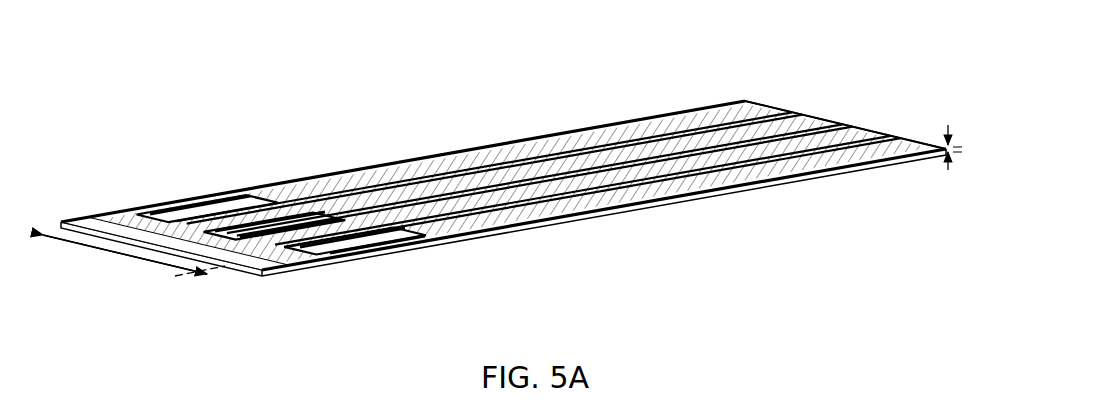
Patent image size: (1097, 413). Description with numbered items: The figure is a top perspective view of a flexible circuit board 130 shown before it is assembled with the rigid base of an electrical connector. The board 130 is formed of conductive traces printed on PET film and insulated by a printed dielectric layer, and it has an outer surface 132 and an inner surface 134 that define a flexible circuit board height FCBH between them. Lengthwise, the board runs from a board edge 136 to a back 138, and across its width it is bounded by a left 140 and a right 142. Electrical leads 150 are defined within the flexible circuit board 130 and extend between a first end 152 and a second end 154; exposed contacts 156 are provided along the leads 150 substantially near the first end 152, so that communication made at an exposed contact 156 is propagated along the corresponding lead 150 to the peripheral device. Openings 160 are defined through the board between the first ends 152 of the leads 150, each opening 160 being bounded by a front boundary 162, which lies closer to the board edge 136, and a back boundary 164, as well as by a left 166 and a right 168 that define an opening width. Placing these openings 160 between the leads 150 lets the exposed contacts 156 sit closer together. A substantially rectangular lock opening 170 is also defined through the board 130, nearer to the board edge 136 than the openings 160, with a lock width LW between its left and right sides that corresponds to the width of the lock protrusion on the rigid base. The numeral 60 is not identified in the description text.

The flexible circuit board 130 is at (362, 62).
The outer surface 132 is at (590, 122).
The inner surface 134 is at (726, 207).
The board edge 136 is at (132, 293).
The back 138 is at (840, 95).
The left 140 is at (584, 224).
The right 142 is at (684, 98).
The electrical leads 150 is at (536, 136).
The first end 152 is at (170, 196).
The second end 154 is at (744, 96).
The exposed contacts 156 is at (265, 212).
The openings 160 is at (420, 230).
The front boundary 162 is at (128, 217).
The back boundary 164 is at (305, 196).
The left 166 is at (366, 218).
The right 168 is at (325, 258).
The lock opening 170 is at (268, 276).
The solder connection 60 is at (238, 200).
The lock width LW is at (125, 258).
The flexible circuit board height FCBH is at (946, 140).